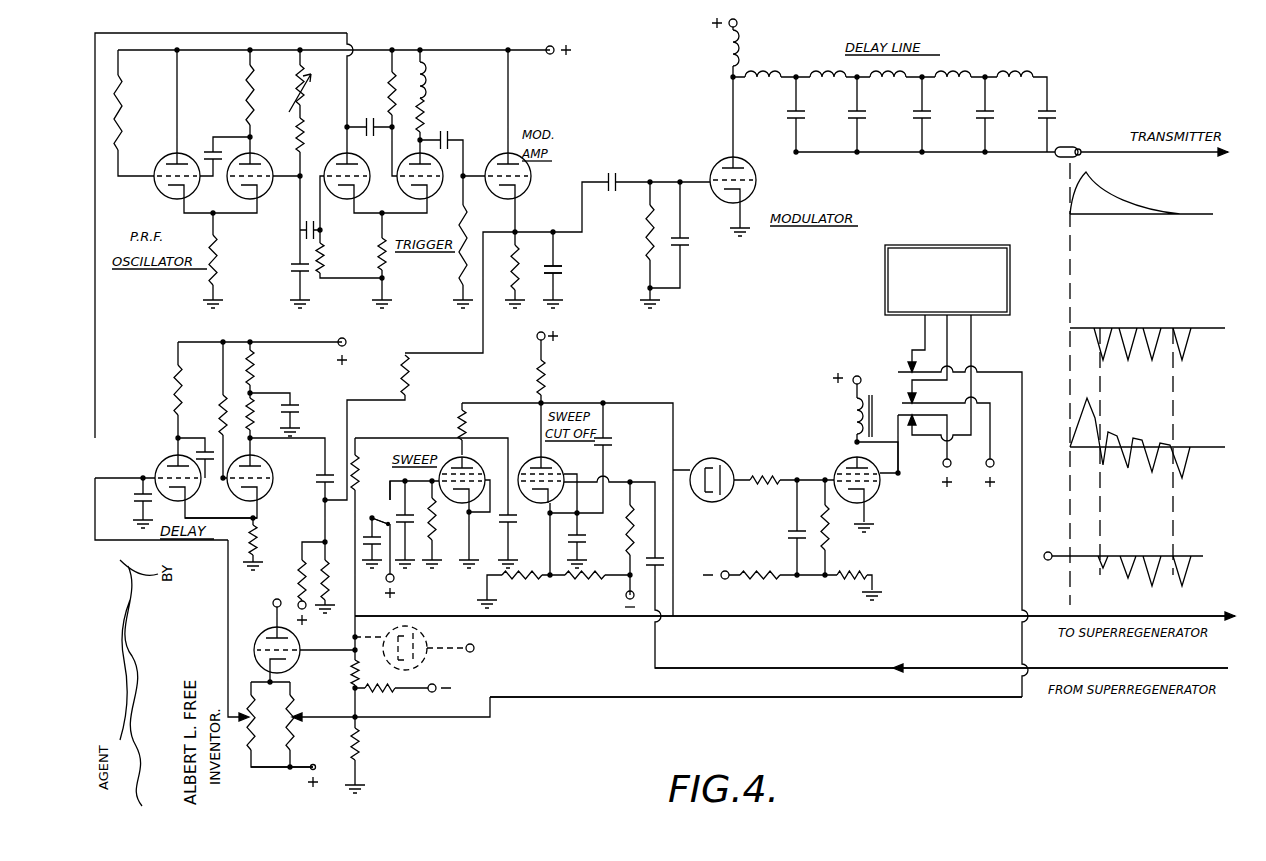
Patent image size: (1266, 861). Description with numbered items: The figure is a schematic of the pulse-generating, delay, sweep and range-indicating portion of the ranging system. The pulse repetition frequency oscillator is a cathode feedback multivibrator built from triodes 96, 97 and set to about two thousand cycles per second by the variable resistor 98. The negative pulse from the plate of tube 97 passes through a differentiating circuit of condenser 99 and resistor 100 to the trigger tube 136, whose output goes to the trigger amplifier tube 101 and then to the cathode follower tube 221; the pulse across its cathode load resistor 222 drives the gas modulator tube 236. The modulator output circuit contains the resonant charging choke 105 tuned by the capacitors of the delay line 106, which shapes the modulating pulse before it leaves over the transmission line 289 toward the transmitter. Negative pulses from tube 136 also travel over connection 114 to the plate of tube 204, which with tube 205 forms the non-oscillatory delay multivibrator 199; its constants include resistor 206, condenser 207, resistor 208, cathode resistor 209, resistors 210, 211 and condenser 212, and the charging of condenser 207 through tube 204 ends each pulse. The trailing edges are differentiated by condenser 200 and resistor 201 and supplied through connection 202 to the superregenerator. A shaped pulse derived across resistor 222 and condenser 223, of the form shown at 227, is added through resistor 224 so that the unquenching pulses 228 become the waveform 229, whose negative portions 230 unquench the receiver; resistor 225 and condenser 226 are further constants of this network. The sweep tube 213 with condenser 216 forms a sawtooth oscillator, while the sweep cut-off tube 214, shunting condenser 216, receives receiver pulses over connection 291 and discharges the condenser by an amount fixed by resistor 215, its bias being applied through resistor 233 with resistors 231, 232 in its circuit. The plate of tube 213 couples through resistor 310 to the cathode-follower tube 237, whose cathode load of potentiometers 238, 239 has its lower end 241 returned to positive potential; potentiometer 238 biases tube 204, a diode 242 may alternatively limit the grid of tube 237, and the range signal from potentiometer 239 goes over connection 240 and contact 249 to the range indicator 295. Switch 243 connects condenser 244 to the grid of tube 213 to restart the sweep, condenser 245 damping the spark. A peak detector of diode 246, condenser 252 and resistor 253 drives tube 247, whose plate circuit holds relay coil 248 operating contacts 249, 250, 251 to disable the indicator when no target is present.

The triode 96 is at (161, 195).
The triode 97 is at (268, 202).
The variable resistor 98 is at (315, 88).
The condenser 99 is at (322, 239).
The resistor 100 is at (322, 263).
The trigger amplifier tube 101 is at (430, 205).
The resonant charging choke 105 is at (742, 62).
The delay line 106 is at (1039, 63).
The connection 114 is at (96, 318).
The trigger tube 136 is at (342, 160).
The delay multivibrator 199 is at (235, 512).
The condenser 200 is at (318, 492).
The resistor 201 is at (321, 556).
The connection 202 is at (1174, 606).
The tube 204 is at (160, 468).
The tube 205 is at (268, 470).
The resistor 206 is at (176, 394).
The condenser 207 is at (210, 448).
The resistor 208 is at (219, 414).
The cathode resistor 209 is at (250, 544).
The resistor 210 is at (255, 408).
The resistor 211 is at (255, 369).
The condenser 212 is at (300, 408).
The sweep tube 213 is at (486, 458).
The sweep cut-off tube 214 is at (527, 462).
The resistor 215 is at (466, 425).
The condenser 216 is at (510, 528).
The cathode follower tube 221 is at (518, 206).
The resistor 222 is at (529, 262).
The condenser 223 is at (564, 268).
The resistor 224 is at (400, 378).
The resistor 225 is at (299, 584).
The condenser 226 is at (617, 162).
The shaped pulse waveform 227 is at (1153, 192).
The unquenching pulse waveform 228 is at (1157, 317).
The combined waveform 229 is at (1155, 424).
The negative portions 230 is at (1152, 551).
The resistor 231 is at (526, 582).
The resistor 232 is at (584, 583).
The resistor 233 is at (626, 528).
The modulator tube 236 is at (755, 192).
The cathode-follower tube 237 is at (262, 632).
The potentiometer 238 is at (242, 740).
The potentiometer 239 is at (306, 734).
The connection 240 is at (580, 697).
The lower end of cathode load 241 is at (289, 770).
The diode 242 is at (418, 672).
The switch 243 is at (383, 512).
The condenser 244 is at (362, 534).
The condenser 245 is at (390, 492).
The diode 246 is at (730, 462).
The tube 247 is at (876, 500).
The relay coil 248 is at (850, 418).
The relay contact 249 is at (900, 364).
The relay contact 250 is at (914, 389).
The relay contact 251 is at (905, 445).
The condenser 252 is at (782, 534).
The resistor 253 is at (832, 540).
The transmission line 289 is at (1068, 148).
The connection 291 is at (1183, 668).
The range indicator 295 is at (885, 282).
The resistor 310 is at (372, 464).